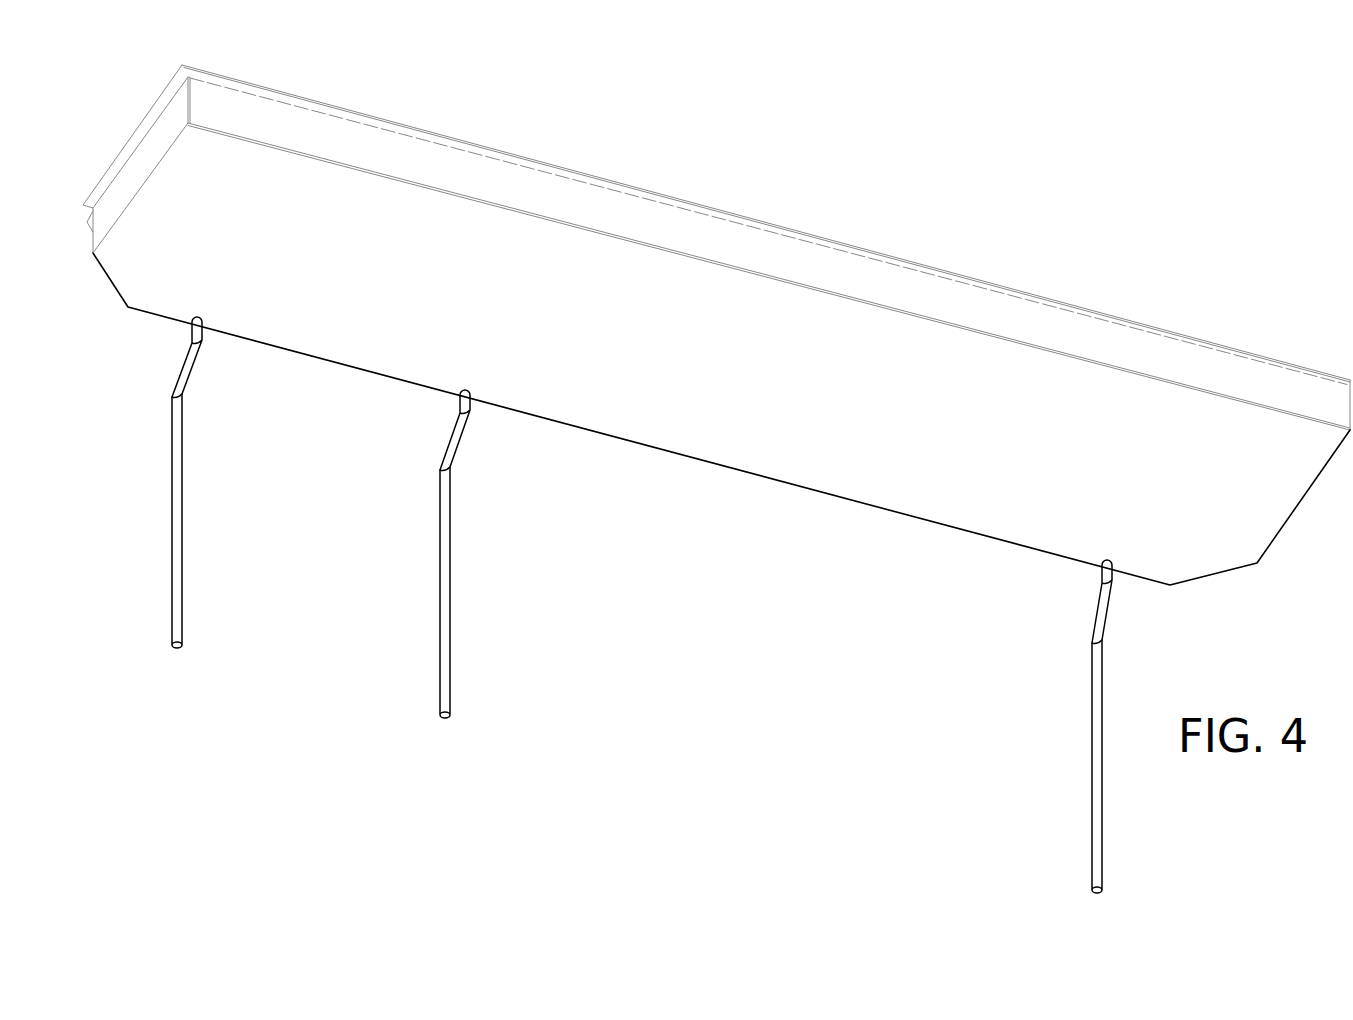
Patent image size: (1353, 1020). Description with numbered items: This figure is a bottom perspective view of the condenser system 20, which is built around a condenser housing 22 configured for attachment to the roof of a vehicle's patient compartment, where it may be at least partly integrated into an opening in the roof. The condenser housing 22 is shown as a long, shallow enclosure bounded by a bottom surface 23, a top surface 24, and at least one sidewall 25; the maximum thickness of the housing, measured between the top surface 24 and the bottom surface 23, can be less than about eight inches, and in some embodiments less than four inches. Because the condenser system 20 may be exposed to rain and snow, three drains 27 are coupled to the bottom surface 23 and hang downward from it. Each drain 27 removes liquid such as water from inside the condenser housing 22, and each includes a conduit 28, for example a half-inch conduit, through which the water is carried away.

The condenser system 20 is at (607, 159).
The condenser housing 22 is at (762, 220).
The bottom surface 23 is at (1267, 500).
The top surface 24 is at (353, 110).
The sidewall 25 is at (1278, 385).
The drain 27 is at (187, 380).
The conduit 28 is at (177, 497).